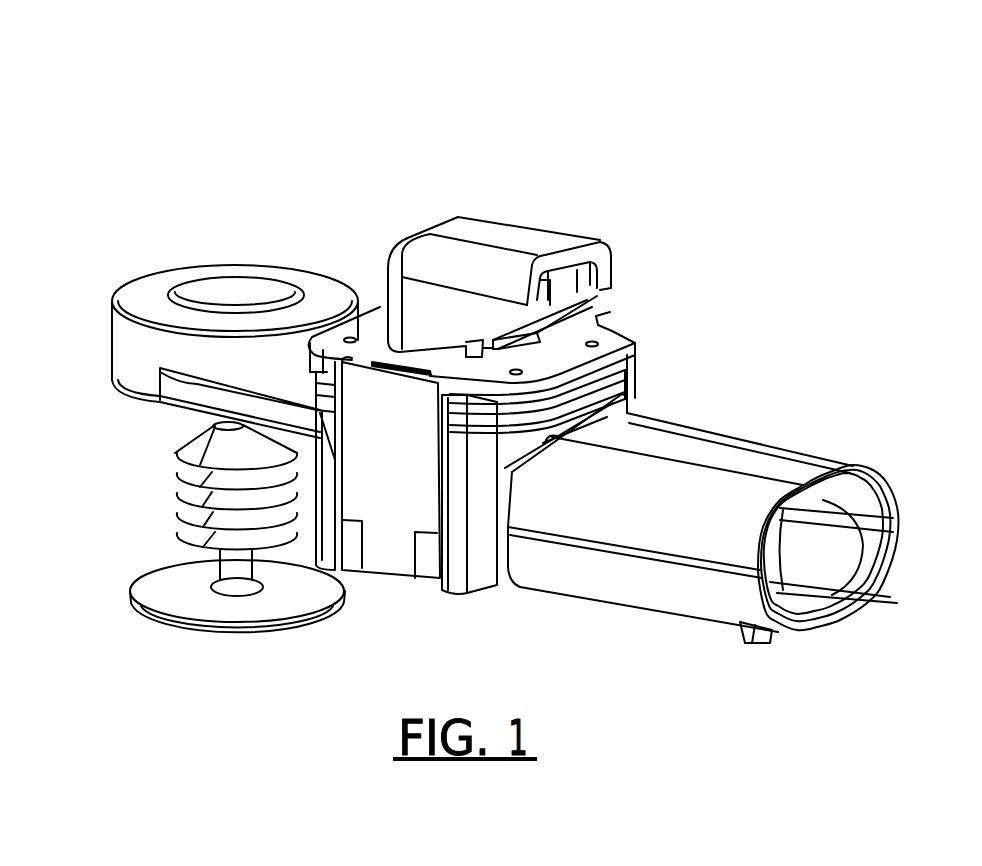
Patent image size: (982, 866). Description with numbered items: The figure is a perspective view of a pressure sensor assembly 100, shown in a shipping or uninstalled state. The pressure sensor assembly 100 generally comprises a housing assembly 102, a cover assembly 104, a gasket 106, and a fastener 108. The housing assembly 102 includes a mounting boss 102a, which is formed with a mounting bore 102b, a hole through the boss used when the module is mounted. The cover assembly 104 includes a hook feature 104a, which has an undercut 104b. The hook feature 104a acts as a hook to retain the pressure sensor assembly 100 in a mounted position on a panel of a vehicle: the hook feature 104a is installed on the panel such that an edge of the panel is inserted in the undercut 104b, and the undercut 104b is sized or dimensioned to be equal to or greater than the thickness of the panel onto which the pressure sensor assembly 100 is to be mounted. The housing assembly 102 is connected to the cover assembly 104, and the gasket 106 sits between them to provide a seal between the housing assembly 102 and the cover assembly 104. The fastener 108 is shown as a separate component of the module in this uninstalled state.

The pressure sensor assembly 100 is at (395, 58).
The housing assembly 102 is at (610, 597).
The mounting boss 102a is at (112, 343).
The mounting bore 102b is at (228, 297).
The cover assembly 104 is at (608, 327).
The hook feature 104a is at (573, 203).
The undercut 104b is at (487, 345).
The gasket 106 is at (628, 390).
The fastener 108 is at (143, 577).